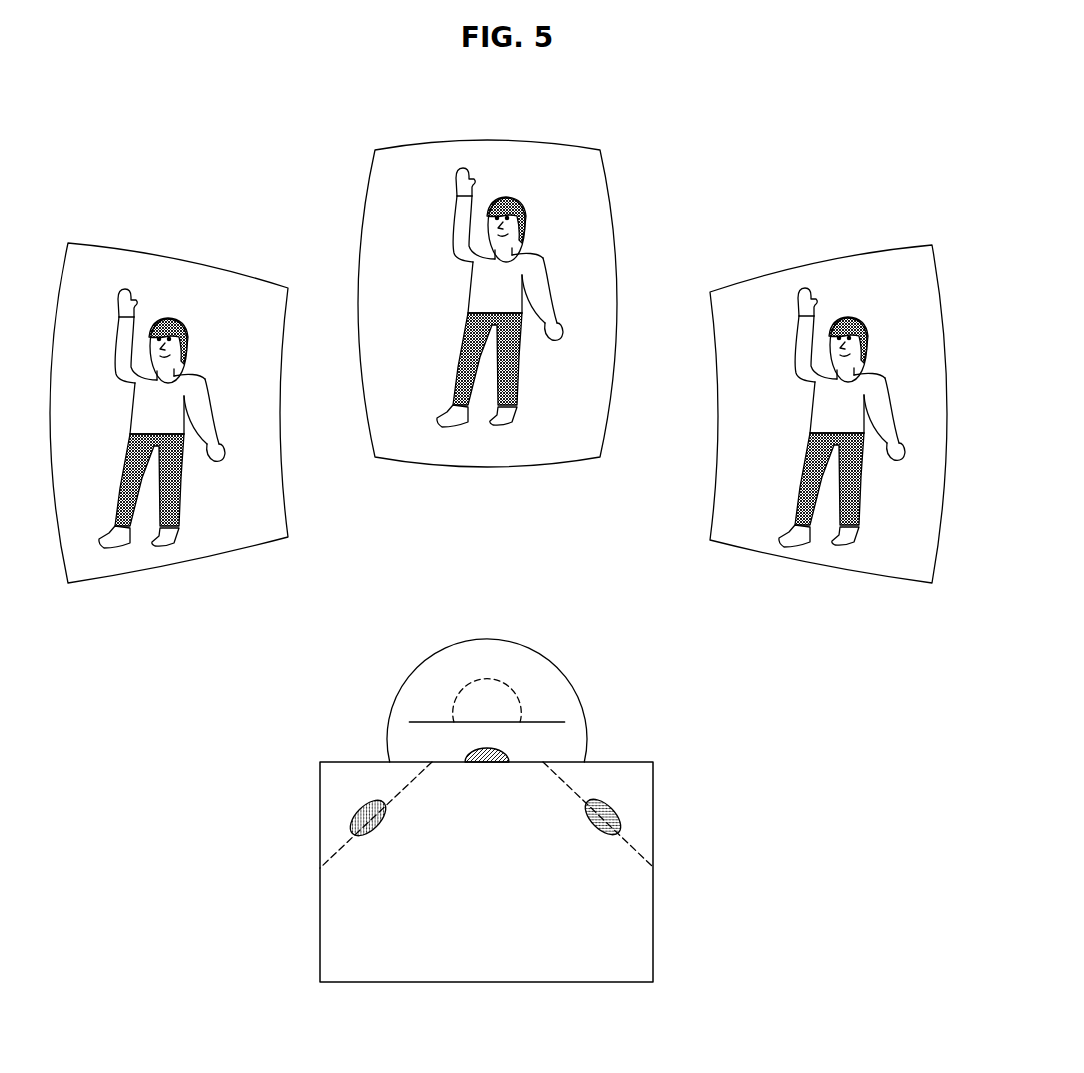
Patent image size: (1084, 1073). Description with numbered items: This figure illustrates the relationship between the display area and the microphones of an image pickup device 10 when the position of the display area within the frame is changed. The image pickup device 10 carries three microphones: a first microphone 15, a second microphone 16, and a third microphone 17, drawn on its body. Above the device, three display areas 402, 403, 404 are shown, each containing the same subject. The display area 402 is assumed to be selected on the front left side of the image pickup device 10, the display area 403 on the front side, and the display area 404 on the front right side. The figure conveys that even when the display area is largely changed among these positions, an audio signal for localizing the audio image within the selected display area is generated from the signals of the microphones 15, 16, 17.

The image pickup device 10 is at (373, 983).
The microphone #1 15 is at (617, 817).
The microphone #2 16 is at (472, 752).
The microphone #3 17 is at (357, 815).
The display area 402 is at (156, 255).
The display area 403 is at (460, 141).
The display area 404 is at (796, 267).